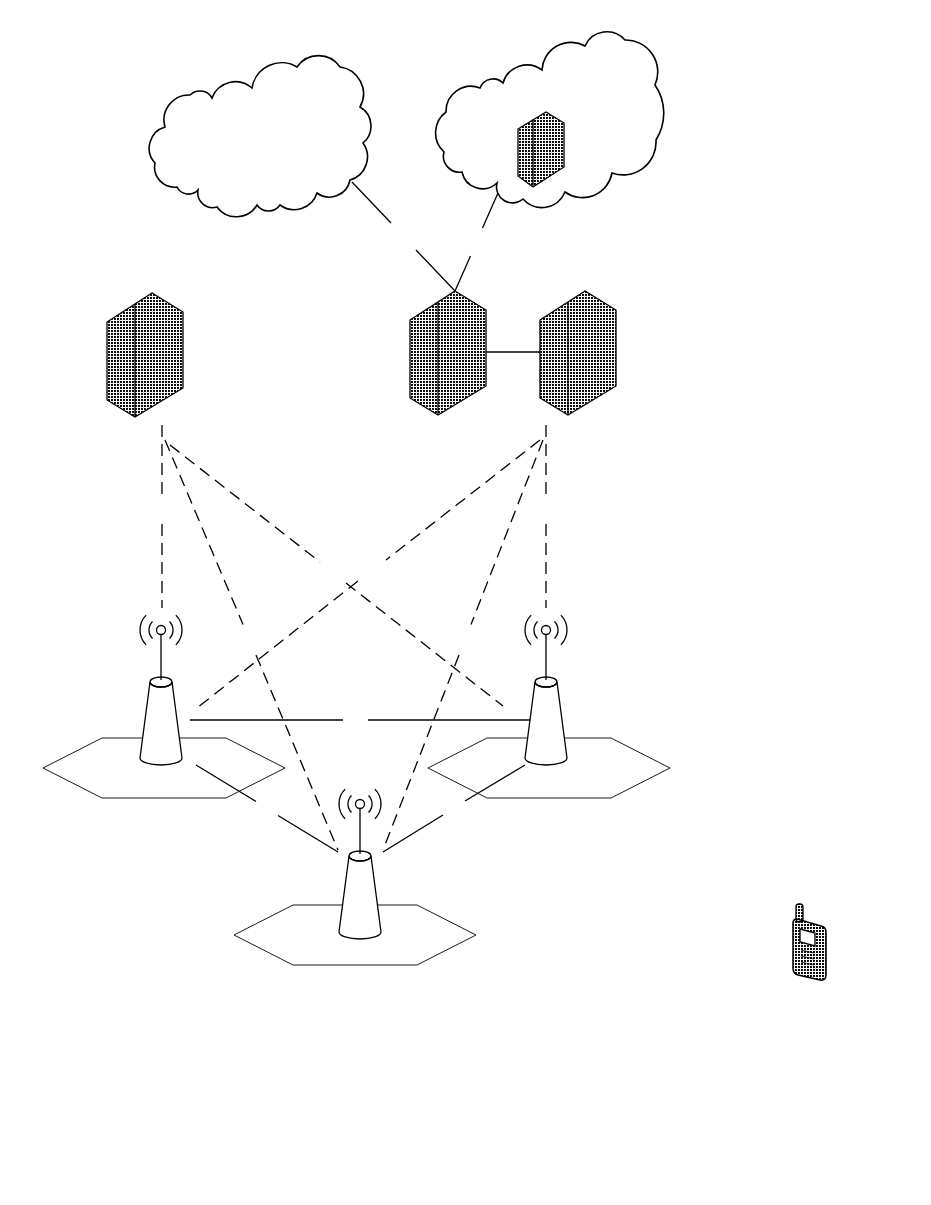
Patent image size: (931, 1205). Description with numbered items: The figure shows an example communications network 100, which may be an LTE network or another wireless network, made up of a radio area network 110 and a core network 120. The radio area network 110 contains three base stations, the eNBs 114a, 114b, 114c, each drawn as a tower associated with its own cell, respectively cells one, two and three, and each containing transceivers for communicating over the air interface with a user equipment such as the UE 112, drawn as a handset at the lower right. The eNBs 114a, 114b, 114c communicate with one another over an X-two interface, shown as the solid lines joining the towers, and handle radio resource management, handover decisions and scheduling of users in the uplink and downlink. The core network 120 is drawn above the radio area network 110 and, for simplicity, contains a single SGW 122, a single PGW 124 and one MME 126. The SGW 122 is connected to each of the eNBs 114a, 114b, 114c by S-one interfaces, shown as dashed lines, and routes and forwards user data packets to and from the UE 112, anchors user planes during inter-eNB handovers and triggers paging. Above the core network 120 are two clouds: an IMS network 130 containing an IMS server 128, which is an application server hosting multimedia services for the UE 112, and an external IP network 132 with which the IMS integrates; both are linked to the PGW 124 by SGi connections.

The communications network 100 is at (430, 23).
The radio area network (RAN) 110 is at (407, 791).
The UE 112 is at (788, 932).
The eNB 114a is at (357, 893).
The eNB 114b is at (165, 705).
The eNB 114c is at (552, 703).
The core network 120 is at (417, 352).
The SGW 122 is at (568, 305).
The PGW 124 is at (418, 311).
The MME 126 is at (128, 311).
The IMS server 128 is at (538, 131).
The IMS network 130 is at (586, 96).
The IP network 132 is at (282, 149).